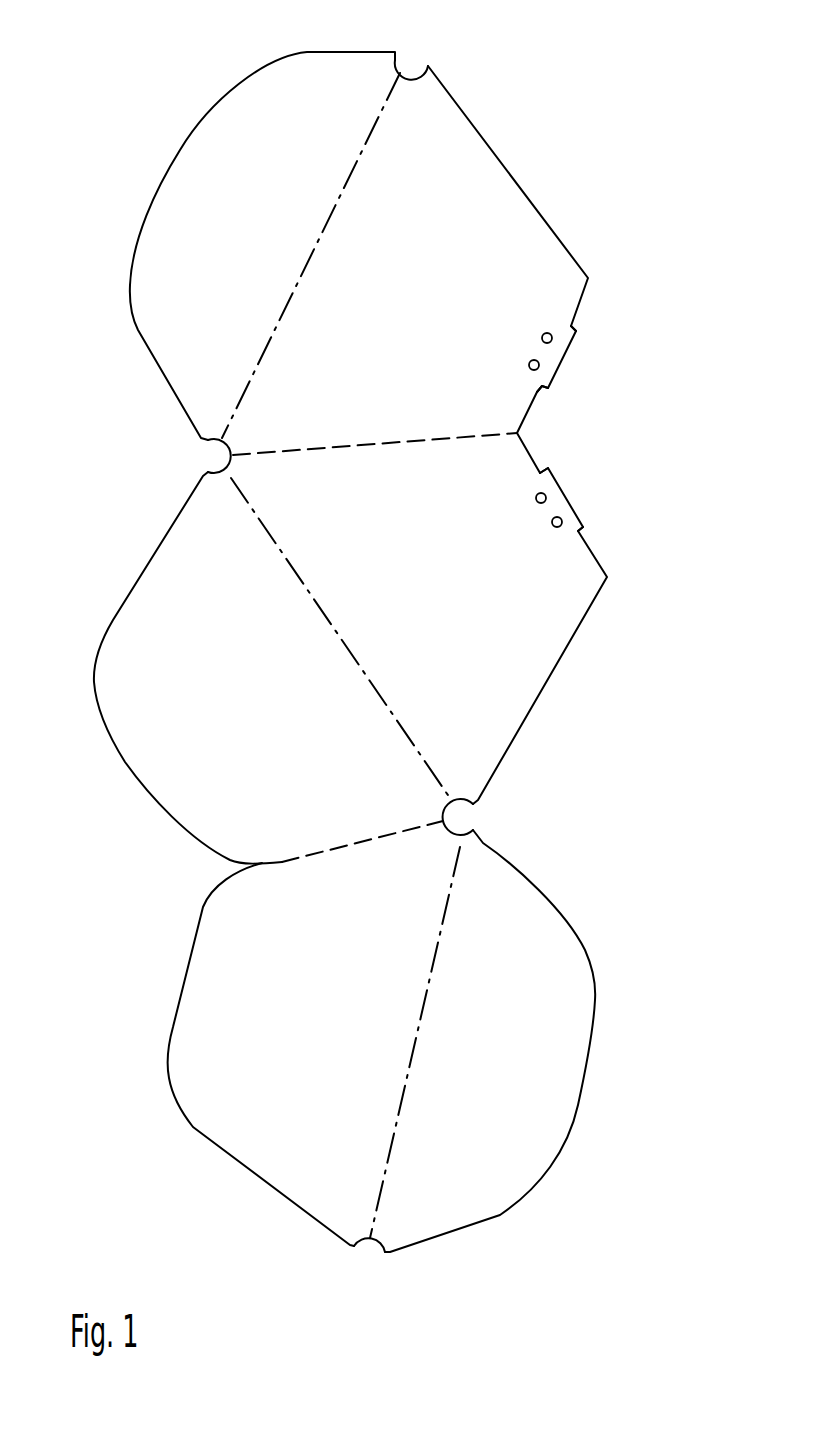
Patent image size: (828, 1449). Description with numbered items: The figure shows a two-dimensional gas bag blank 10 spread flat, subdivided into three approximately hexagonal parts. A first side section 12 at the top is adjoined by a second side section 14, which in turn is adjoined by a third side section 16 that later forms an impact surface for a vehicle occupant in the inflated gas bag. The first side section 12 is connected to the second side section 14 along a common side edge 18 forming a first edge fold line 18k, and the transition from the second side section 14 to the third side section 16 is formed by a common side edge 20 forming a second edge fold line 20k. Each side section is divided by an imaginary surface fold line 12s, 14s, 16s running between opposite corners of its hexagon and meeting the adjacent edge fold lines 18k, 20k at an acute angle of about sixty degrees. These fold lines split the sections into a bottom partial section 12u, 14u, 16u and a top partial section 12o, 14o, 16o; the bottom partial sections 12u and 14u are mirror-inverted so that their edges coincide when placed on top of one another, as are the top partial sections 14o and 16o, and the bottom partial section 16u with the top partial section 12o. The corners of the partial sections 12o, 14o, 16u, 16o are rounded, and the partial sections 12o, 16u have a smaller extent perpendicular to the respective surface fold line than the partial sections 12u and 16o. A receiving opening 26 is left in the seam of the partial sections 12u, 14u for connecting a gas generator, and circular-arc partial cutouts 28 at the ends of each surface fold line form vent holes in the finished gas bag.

The gas bag blank 10 is at (604, 92).
The first side section 12 is at (403, 305).
The top partial section of the first side section 12o is at (187, 188).
The bottom partial section of the first side section 12u is at (507, 207).
The surface fold line of the first side section 12s is at (311, 254).
The second side section 14 is at (428, 599).
The top partial section of the second side section 14o is at (152, 600).
The bottom partial section of the second side section 14u is at (527, 680).
The surface fold line of the second side section 14s is at (330, 646).
The third side section 16 is at (348, 1028).
The top partial section of the third side section 16o is at (203, 1003).
The bottom partial section of the third side section 16u is at (553, 1117).
The surface fold line of the third side section 16s is at (432, 982).
The common side edge 18 is at (375, 402).
The first edge fold line 18k is at (440, 433).
The common side edge 20 is at (362, 878).
The second edge fold line 20k is at (350, 847).
The receiving opening 26 is at (577, 365).
The partial cutouts 28 is at (413, 56).